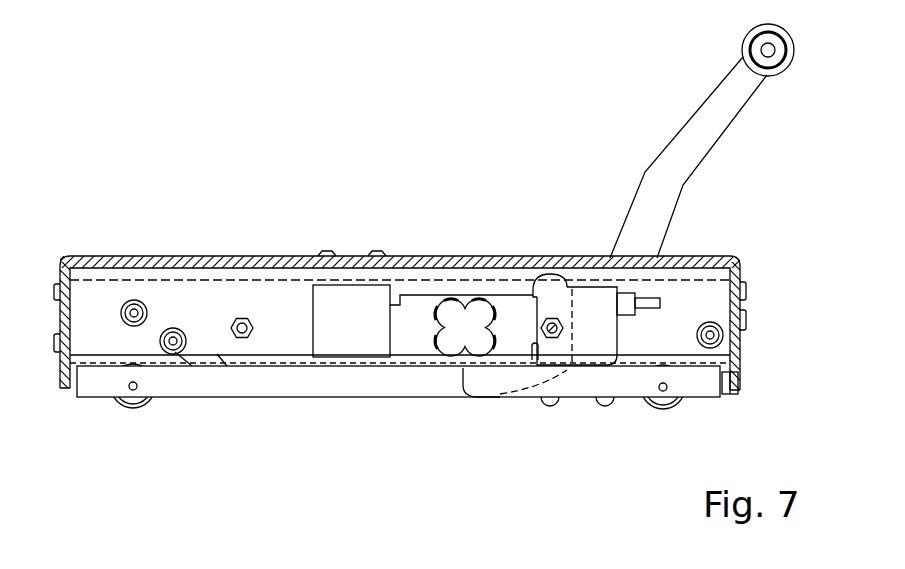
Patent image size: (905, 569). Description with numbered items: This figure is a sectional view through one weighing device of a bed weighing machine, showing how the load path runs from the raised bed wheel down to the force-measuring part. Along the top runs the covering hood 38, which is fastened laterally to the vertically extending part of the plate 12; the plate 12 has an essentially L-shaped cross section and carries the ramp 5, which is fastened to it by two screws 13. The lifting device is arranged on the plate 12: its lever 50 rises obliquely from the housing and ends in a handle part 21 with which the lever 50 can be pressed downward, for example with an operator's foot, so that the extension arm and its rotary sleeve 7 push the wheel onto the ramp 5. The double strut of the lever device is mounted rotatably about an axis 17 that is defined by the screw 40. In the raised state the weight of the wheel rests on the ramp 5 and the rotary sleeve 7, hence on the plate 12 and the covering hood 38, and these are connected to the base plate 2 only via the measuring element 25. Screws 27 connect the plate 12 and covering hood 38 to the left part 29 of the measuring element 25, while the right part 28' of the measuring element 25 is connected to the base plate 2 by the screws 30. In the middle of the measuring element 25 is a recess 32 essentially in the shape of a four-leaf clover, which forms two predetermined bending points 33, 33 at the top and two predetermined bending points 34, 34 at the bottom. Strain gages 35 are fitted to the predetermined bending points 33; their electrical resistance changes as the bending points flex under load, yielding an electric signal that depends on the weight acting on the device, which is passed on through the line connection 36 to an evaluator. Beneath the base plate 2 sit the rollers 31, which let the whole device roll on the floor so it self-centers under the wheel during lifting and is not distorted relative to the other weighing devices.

The base plate 2 is at (260, 383).
The ramp 5 is at (210, 360).
The rotary sleeve 7 is at (480, 397).
The plate 12 is at (745, 283).
The screws 13 is at (160, 337).
The axis 17 is at (723, 336).
The handle part 21 is at (742, 46).
The measuring element 25 is at (417, 323).
The screws 27 is at (322, 253).
The bracket 28' is at (574, 268).
The left part 29 is at (350, 294).
The screws 30 is at (550, 405).
The rollers 31 is at (120, 408).
The recess 32 is at (463, 333).
The predetermined bending points 33 is at (433, 307).
The predetermined bending points 34 is at (433, 340).
The strain gages 35 is at (450, 298).
The line connection 36 is at (648, 300).
The covering hood 38 is at (147, 258).
The screw 40 is at (718, 345).
The lever 50 is at (700, 132).